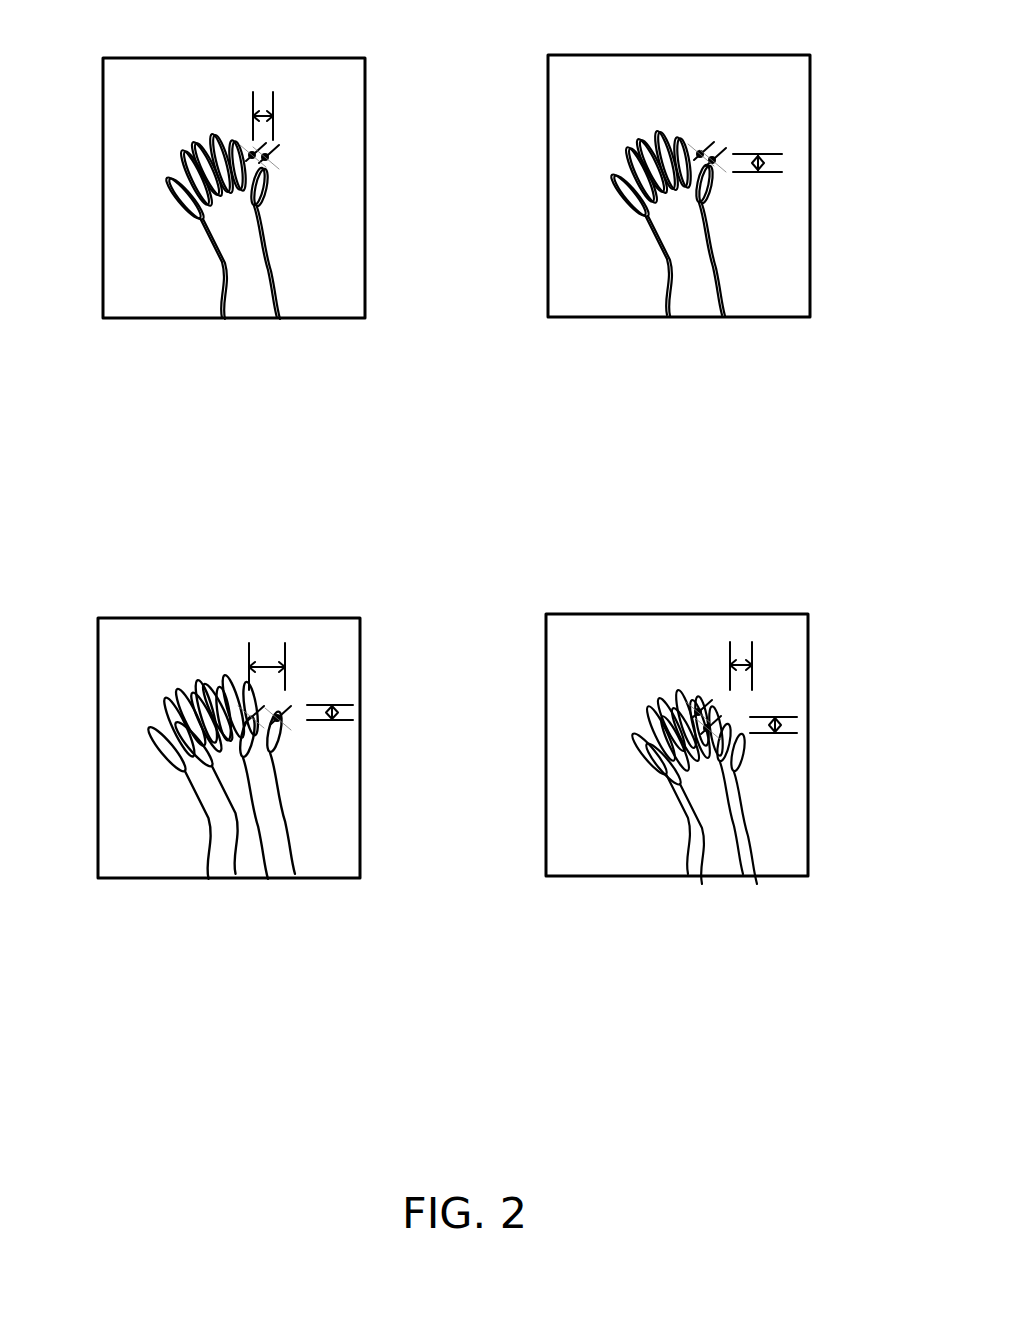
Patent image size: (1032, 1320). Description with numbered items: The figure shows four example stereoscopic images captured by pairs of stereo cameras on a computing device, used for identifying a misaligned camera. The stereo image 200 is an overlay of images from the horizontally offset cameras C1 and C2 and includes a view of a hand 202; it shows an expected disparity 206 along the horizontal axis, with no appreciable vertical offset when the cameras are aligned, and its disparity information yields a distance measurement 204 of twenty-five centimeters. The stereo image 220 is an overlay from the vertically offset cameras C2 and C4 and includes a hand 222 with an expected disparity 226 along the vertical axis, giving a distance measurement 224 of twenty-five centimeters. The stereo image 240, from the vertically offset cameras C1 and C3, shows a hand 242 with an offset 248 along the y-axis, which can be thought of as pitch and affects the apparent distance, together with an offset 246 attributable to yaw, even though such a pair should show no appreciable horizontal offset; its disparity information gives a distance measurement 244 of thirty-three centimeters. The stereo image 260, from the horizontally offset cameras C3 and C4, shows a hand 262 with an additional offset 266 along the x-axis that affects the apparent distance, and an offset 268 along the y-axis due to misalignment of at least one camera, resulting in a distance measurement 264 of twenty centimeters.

The stereo image 200 is at (401, 110).
The hand 202 is at (190, 233).
The distance measurement 204 is at (377, 353).
The disparity 206 is at (241, 105).
The stereo image 220 is at (851, 110).
The hand 222 is at (640, 232).
The distance measurement 224 is at (822, 353).
The disparity 226 is at (757, 122).
The stereo image 240 is at (397, 623).
The hand 242 is at (163, 792).
The distance measurement 244 is at (368, 913).
The offset 246 is at (237, 660).
The offset 248 is at (347, 698).
The stereo image 260 is at (837, 623).
The hand 262 is at (613, 790).
The distance measurement 264 is at (810, 913).
The additional offset 266 is at (717, 657).
The offset 268 is at (783, 710).